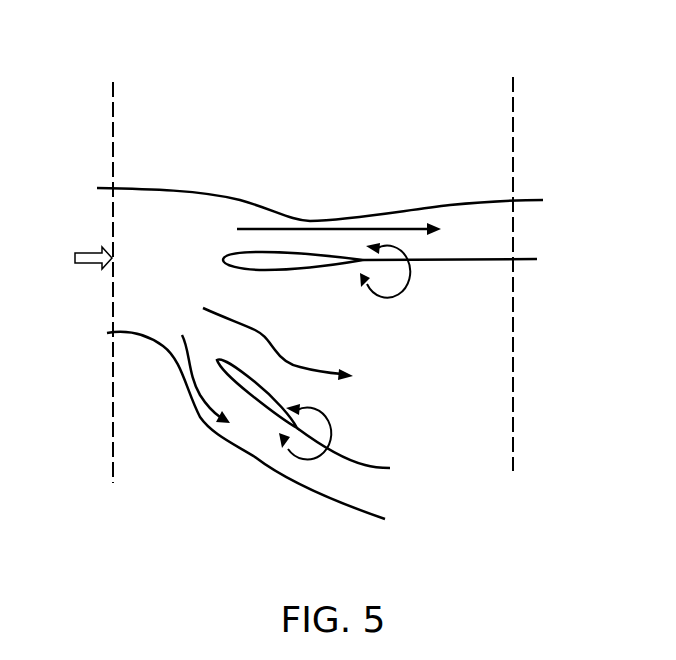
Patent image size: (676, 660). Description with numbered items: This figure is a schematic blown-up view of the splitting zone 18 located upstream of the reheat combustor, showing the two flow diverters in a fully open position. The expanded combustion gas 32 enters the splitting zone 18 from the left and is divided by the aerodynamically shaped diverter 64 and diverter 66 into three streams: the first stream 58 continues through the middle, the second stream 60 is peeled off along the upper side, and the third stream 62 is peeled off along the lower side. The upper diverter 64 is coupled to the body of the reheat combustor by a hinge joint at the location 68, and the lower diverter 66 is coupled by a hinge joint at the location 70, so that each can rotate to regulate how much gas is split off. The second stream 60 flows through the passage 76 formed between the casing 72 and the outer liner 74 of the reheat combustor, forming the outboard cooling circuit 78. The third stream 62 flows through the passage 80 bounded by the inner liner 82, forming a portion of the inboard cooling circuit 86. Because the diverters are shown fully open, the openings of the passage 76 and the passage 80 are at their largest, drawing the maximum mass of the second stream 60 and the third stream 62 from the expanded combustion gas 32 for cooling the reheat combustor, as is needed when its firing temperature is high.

The splitting zone 18 is at (132, 66).
The expanded combustion gas 32 is at (84, 247).
The first stream 58 is at (305, 366).
The second stream 60 is at (410, 228).
The third stream 62 is at (167, 345).
The diverter 64 is at (279, 250).
The diverter 66 is at (245, 393).
The location 68 is at (371, 264).
The location 70 is at (300, 430).
The casing 72 is at (532, 198).
The outer liner 74 is at (531, 261).
The passage 76 is at (316, 240).
The outboard cooling circuit 78 is at (370, 157).
The passage 80 is at (255, 447).
The inner liner 82 is at (360, 460).
The inboard cooling circuit 86 is at (196, 432).